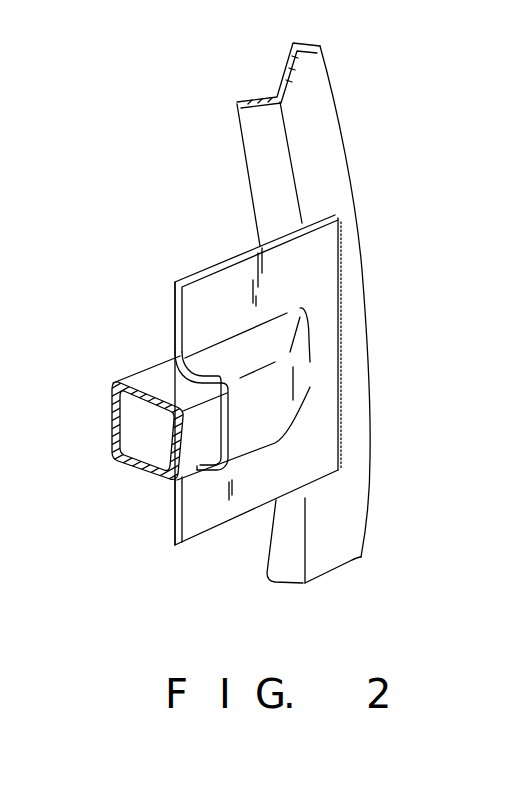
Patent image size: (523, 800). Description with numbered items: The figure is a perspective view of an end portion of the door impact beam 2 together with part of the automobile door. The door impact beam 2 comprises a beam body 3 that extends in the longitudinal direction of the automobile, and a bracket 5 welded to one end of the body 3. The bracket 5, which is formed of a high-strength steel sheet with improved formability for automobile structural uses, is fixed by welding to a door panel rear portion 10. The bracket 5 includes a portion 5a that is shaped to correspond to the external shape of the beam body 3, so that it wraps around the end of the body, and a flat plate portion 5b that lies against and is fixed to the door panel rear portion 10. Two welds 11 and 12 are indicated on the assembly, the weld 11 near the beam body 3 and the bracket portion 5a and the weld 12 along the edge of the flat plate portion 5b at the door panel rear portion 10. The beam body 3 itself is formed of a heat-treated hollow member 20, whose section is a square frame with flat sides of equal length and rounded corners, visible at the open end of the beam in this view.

The door impact beam 2 is at (104, 373).
The beam body 3 is at (110, 440).
The bracket 5 is at (175, 527).
The portion shaped corresponding to the external shape of the beam body 5a is at (275, 437).
The flat plate portion 5b is at (327, 322).
The door panel rear portion 10 is at (350, 187).
The weld 11 is at (168, 375).
The weld 12 is at (338, 380).
The heat-treated hollow member 20 is at (190, 443).